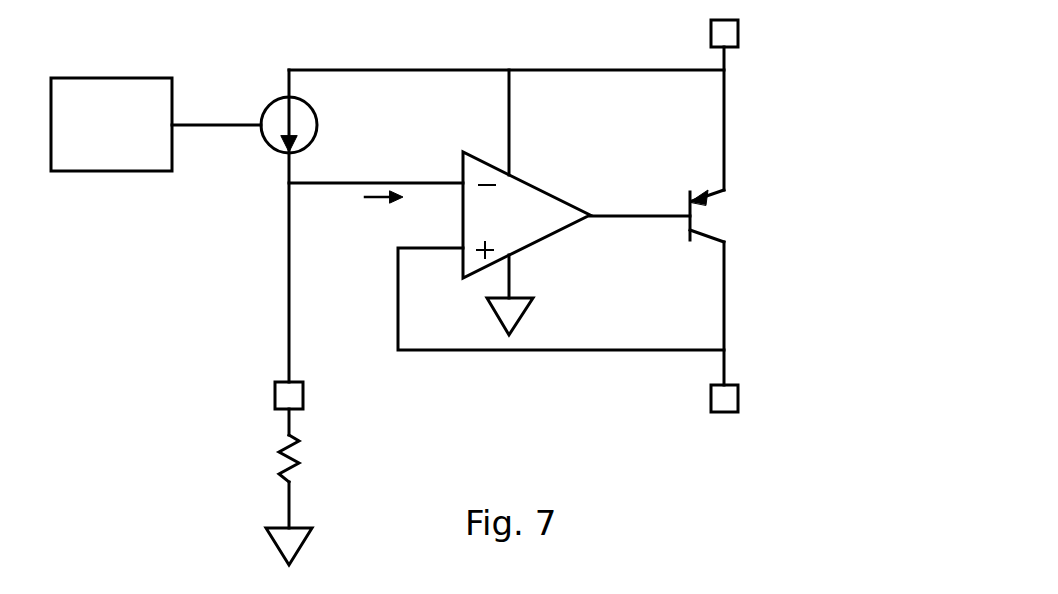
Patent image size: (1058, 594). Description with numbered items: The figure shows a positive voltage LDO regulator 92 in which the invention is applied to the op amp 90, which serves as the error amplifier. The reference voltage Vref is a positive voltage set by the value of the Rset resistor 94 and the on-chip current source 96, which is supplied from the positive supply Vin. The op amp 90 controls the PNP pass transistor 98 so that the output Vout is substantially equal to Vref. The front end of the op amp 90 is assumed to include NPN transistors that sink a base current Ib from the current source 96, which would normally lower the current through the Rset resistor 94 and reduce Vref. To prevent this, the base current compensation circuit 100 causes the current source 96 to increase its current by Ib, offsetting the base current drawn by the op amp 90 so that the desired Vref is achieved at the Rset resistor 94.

The positive voltage LDO regulator 92 is at (477, 292).
The op amp 90 is at (546, 193).
The Rset resistor 94 is at (268, 464).
The current source 96 is at (317, 124).
The PNP pass transistor 98 is at (728, 208).
The base current compensation circuit 100 is at (100, 172).